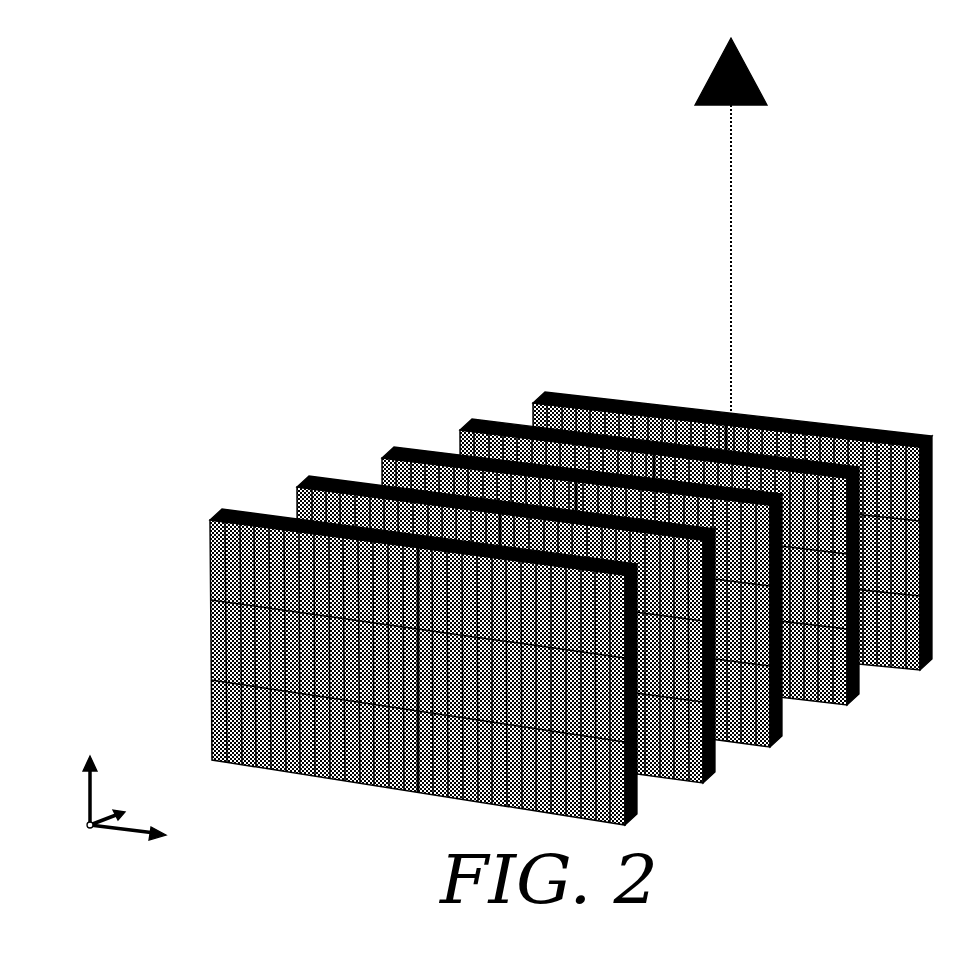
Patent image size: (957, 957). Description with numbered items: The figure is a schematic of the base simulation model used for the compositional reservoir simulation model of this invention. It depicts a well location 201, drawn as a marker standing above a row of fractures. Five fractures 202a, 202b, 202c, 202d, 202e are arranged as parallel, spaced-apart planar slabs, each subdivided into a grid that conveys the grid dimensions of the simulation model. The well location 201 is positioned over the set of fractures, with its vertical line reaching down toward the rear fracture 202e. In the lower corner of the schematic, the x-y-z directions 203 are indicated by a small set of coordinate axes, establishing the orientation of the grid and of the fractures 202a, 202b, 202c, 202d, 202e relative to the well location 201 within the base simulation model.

The well location 201 is at (769, 73).
The fracture 202a is at (230, 518).
The fracture 202b is at (329, 486).
The fracture 202c is at (412, 456).
The fracture 202d is at (488, 428).
The fracture 202e is at (565, 402).
The x-y-z directions 203 is at (136, 780).